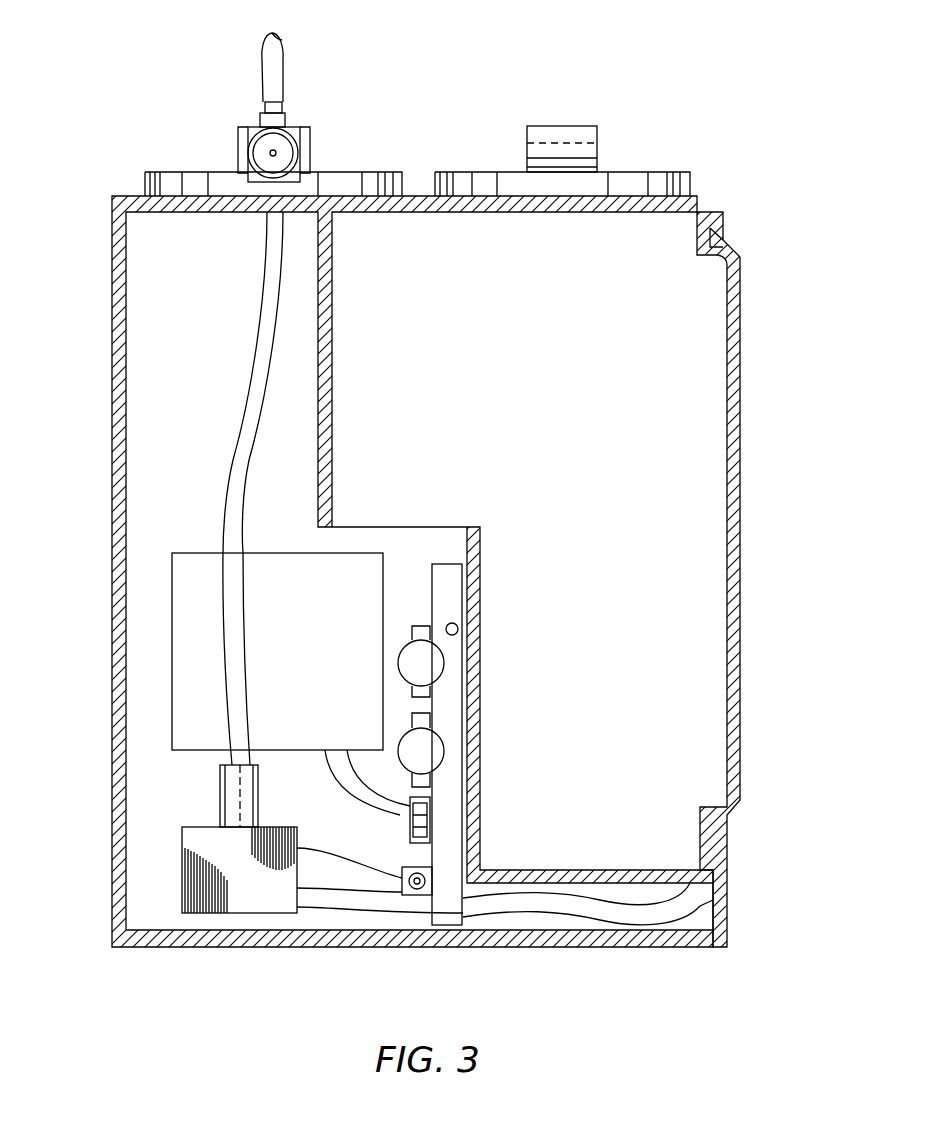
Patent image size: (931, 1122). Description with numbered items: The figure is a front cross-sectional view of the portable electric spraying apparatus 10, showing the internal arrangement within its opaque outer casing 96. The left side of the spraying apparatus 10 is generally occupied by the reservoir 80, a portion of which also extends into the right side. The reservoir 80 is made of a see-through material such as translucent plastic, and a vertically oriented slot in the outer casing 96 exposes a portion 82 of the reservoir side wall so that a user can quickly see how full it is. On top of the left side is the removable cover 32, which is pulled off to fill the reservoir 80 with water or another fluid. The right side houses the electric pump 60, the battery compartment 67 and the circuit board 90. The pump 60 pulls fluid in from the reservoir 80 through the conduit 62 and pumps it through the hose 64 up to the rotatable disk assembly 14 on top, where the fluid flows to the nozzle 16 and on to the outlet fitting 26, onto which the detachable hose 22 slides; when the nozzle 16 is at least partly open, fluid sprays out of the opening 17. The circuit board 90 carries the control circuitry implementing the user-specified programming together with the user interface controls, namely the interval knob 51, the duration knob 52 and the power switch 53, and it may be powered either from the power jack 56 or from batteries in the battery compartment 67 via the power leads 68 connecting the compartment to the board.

The portable electric spraying apparatus 10 is at (686, 116).
The rotatable disk assembly 14 is at (145, 183).
The nozzle 16 is at (258, 131).
The opening 17 is at (275, 153).
The hose 22 is at (277, 74).
The outlet fitting 26 is at (276, 109).
The removable cover 32 is at (462, 182).
The knob 51 is at (428, 665).
The knob 52 is at (428, 752).
The power switch 53 is at (427, 818).
The power jack 56 is at (428, 884).
The electric pump 60 is at (225, 893).
The conduit 62 is at (600, 905).
The hose 64 is at (237, 484).
The battery compartment 67 is at (193, 700).
The power leads 68 is at (372, 806).
The reservoir 80 is at (653, 350).
The portion of the side wall of reservoir 82 is at (740, 450).
The circuit board 90 is at (448, 855).
The outer casing 96 is at (118, 342).